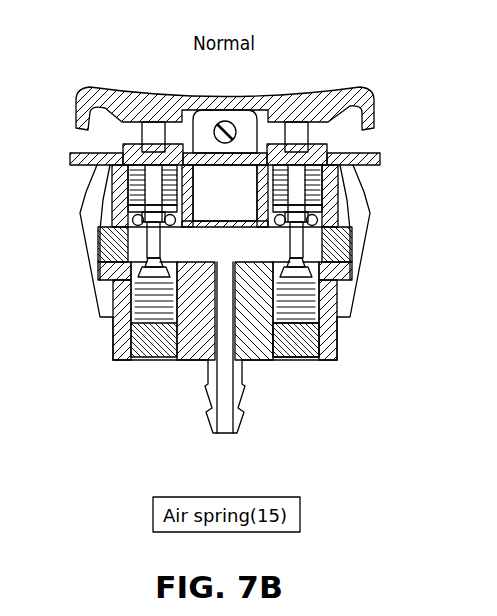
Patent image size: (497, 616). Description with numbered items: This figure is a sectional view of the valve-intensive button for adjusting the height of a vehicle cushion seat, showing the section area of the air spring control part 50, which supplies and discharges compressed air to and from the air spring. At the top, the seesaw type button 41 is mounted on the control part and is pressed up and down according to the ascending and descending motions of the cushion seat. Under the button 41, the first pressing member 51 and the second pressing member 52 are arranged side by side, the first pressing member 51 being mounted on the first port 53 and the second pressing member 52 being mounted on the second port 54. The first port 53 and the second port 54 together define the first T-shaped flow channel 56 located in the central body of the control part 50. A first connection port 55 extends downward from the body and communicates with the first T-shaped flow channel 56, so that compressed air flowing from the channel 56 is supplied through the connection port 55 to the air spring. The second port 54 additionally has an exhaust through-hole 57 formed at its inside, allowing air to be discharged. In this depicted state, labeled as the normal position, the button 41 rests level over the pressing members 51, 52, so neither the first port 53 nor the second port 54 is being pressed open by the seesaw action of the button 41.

The button 41 is at (147, 90).
The air spring control part 50 is at (308, 63).
The first pressing member 51 is at (140, 132).
The second pressing member 52 is at (308, 133).
The first port 53 is at (115, 296).
The second port 54 is at (335, 296).
The first connection port 55 is at (208, 394).
The first T-shaped flow channel 56 is at (226, 244).
The exhaust through-hole 57 is at (297, 358).